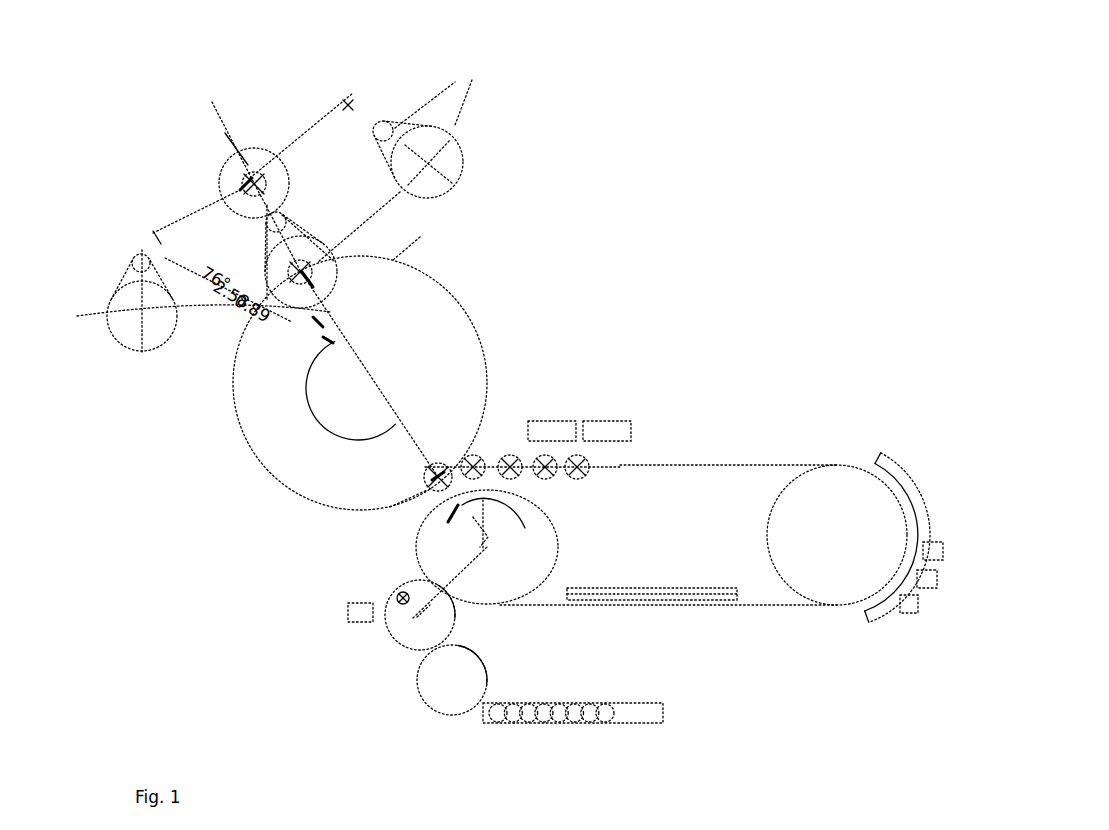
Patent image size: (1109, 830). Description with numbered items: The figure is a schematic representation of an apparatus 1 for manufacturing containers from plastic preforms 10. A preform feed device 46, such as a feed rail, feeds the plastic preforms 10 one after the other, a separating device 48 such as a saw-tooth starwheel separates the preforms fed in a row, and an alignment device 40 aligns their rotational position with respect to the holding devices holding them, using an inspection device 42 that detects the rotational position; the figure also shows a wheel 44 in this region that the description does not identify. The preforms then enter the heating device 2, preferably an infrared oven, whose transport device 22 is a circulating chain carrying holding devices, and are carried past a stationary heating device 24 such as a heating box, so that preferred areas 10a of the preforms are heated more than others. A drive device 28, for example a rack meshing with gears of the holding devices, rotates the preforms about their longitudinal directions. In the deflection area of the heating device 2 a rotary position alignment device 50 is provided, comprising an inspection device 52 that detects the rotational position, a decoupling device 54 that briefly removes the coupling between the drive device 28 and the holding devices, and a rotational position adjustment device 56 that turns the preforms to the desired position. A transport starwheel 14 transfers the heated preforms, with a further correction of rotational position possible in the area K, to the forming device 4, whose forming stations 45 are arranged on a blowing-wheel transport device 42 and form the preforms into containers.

The apparatus 1 is at (648, 194).
The heating device 2 is at (712, 432).
The forming device 4 is at (484, 209).
The plastic preforms 10 is at (585, 472).
The preferred areas 10a is at (573, 452).
The transport device 14 is at (272, 477).
The transport device 22 is at (763, 465).
The heating device 24 is at (540, 432).
The drive device 28 is at (686, 603).
The alignment device 40 is at (374, 638).
The inspection device 42 is at (352, 612).
The transfer wheel 44 is at (400, 598).
The forming stations 45 is at (447, 157).
The preform feed device 46 is at (625, 713).
The separating device 48 is at (440, 675).
The rotary position alignment device 50 is at (893, 628).
The inspection device 52 is at (912, 608).
The decoupling device 54 is at (930, 580).
The rotational position adjustment device 56 is at (935, 545).
The area K is at (443, 473).